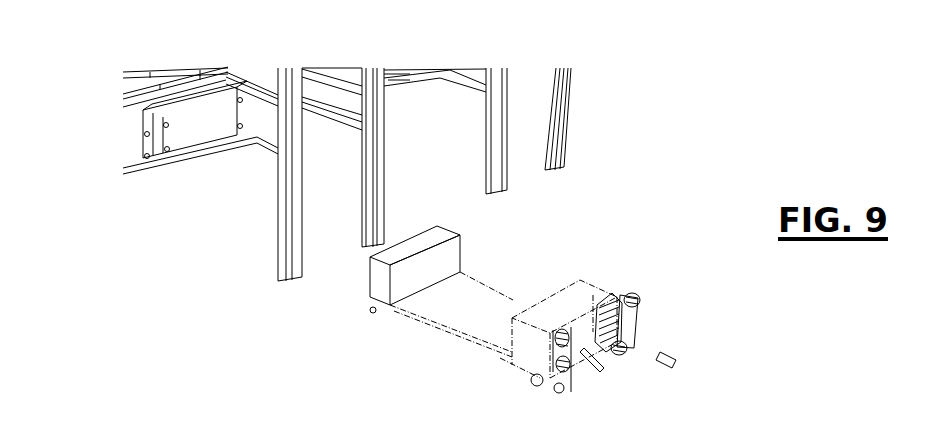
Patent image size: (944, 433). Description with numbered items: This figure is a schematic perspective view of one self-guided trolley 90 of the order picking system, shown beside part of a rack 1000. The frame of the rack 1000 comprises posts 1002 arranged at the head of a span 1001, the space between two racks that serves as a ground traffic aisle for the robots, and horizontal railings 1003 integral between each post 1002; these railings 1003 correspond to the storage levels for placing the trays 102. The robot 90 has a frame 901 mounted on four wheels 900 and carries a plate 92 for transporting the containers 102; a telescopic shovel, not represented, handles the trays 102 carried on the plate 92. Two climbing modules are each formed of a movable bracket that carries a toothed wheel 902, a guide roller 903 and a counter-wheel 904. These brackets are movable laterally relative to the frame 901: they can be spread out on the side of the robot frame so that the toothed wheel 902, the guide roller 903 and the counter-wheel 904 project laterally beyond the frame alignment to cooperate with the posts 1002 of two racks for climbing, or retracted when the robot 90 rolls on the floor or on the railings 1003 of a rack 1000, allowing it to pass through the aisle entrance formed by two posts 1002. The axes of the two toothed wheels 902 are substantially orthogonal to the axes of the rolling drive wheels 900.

The rack 1000 is at (217, 71).
The post 1002 is at (382, 127).
The horizontal railing 1003 is at (255, 138).
The tray 102 is at (123, 145).
The plate 92 is at (483, 287).
The frame 901 is at (393, 255).
The wheel 900 is at (375, 308).
The self-guided trolley 90 is at (597, 338).
The counter-wheel 904 is at (563, 357).
The toothed wheel 902 is at (560, 357).
The guide roller 903 is at (560, 386).
The span 1001 is at (703, 425).